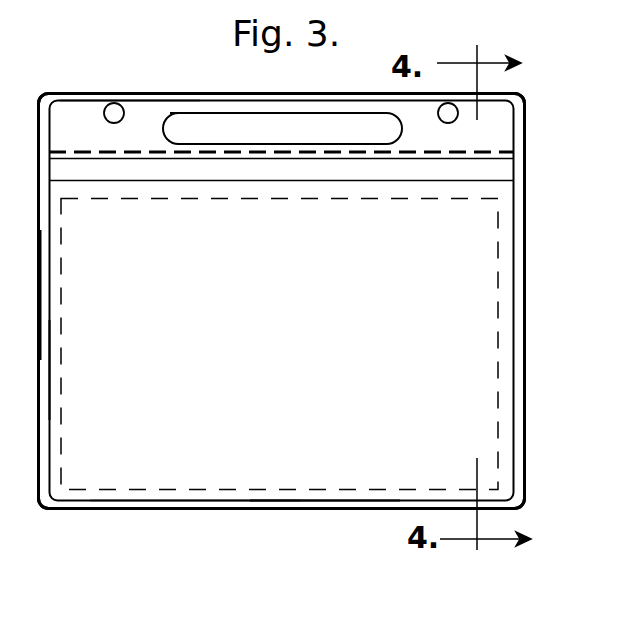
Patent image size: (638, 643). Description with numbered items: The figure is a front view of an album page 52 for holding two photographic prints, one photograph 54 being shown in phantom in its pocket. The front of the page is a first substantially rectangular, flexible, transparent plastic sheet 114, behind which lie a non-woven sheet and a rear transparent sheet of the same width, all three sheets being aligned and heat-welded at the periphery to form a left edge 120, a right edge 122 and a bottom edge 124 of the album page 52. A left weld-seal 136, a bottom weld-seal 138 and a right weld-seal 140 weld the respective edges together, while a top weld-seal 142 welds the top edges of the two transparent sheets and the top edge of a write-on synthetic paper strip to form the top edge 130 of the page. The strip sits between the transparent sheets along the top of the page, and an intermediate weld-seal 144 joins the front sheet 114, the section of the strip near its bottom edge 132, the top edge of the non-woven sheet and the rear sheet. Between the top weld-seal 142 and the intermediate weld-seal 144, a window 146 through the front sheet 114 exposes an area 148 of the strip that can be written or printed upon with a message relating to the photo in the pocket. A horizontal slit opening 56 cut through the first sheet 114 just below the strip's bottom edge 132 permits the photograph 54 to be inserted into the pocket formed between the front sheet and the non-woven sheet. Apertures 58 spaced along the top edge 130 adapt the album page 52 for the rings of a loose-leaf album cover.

The album page 52 is at (116, 82).
The photographic print 54 is at (233, 199).
The slit opening 56 is at (477, 180).
The apertures 58 is at (118, 121).
The first transparent plastic sheet 114 is at (340, 335).
The left edge 120 is at (36, 275).
The right edge 122 is at (525, 323).
The bottom edge 124 is at (147, 513).
The top edge 130 is at (163, 94).
The bottom edge of synthetic paper strip 132 is at (93, 159).
The left weld-seal 136 is at (49, 373).
The bottom weld-seal 138 is at (327, 500).
The right weld-seal 140 is at (515, 393).
The top weld-seal 142 is at (303, 107).
The intermediate weld-seal 144 is at (475, 147).
The window 146 is at (205, 120).
The exposed area 148 is at (303, 138).